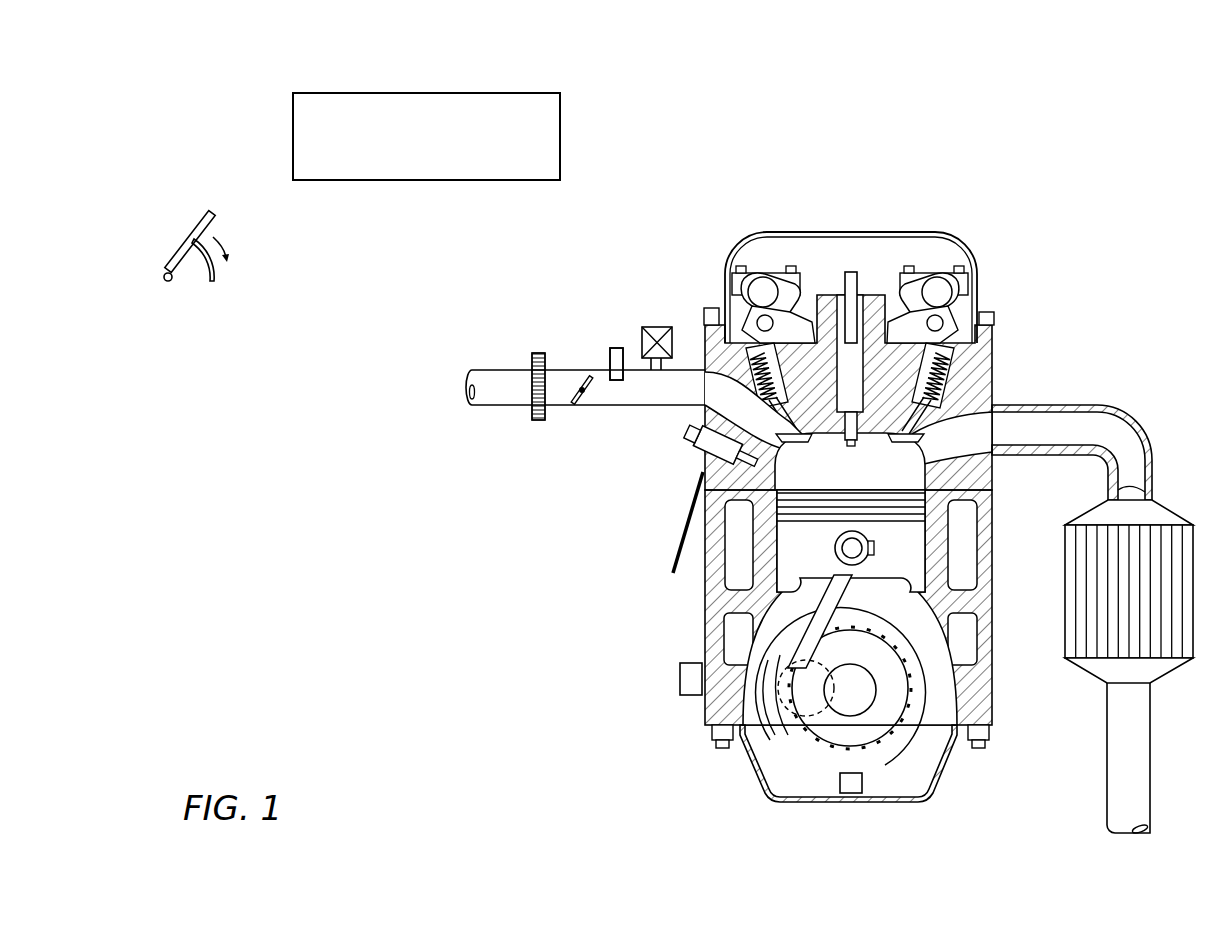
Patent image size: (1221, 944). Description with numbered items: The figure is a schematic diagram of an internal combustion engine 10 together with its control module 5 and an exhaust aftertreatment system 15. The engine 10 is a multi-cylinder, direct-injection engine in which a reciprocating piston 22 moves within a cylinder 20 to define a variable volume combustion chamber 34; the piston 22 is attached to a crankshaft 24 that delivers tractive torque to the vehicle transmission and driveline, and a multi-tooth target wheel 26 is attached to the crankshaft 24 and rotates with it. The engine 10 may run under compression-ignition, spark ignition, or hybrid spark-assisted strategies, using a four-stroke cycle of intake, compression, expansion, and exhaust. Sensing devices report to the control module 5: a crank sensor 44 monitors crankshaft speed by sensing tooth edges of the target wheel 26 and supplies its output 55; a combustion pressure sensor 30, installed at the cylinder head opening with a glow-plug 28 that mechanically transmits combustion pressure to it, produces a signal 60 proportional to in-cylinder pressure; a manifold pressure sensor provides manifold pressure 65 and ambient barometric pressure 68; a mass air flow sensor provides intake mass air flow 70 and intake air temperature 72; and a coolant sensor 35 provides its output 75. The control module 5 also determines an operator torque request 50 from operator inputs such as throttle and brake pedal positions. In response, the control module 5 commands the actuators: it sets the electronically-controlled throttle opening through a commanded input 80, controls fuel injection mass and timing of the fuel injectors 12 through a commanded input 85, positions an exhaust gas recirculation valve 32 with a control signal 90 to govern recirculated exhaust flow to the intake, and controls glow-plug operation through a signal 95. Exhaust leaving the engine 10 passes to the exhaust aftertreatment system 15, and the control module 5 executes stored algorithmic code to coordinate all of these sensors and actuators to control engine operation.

The control module 5 is at (419, 153).
The internal combustion engine 10 is at (839, 514).
The fuel injector 12 is at (853, 292).
The exhaust aftertreatment system 15 is at (1170, 520).
The cylinder 20 is at (925, 458).
The piston 22 is at (798, 554).
The crankshaft 24 is at (925, 690).
The multi-tooth target wheel 26 is at (890, 707).
The glow-plug 28 is at (638, 440).
The combustion pressure sensor 30 is at (642, 575).
The exhaust gas recirculation valve 32 is at (663, 327).
The combustion chamber 34 is at (836, 479).
The coolant sensor 35 is at (645, 682).
The crank sensor 44 is at (862, 785).
The operator torque request 50 is at (320, 194).
The crank sensor signal output 55 is at (345, 194).
The in-cylinder pressure signal 60 is at (395, 194).
The manifold pressure signal 65 is at (495, 194).
The ambient barometric pressure signal 68 is at (587, 324).
The intake mass air flow signal 70 is at (470, 194).
The intake air temperature signal 72 is at (522, 362).
The coolant sensor output 75 is at (370, 194).
The throttle command input 80 is at (445, 180).
The fuel injection command input 85 is at (545, 180).
The EGR control signal 90 is at (520, 194).
The glow-plug operation signal 95 is at (420, 180).